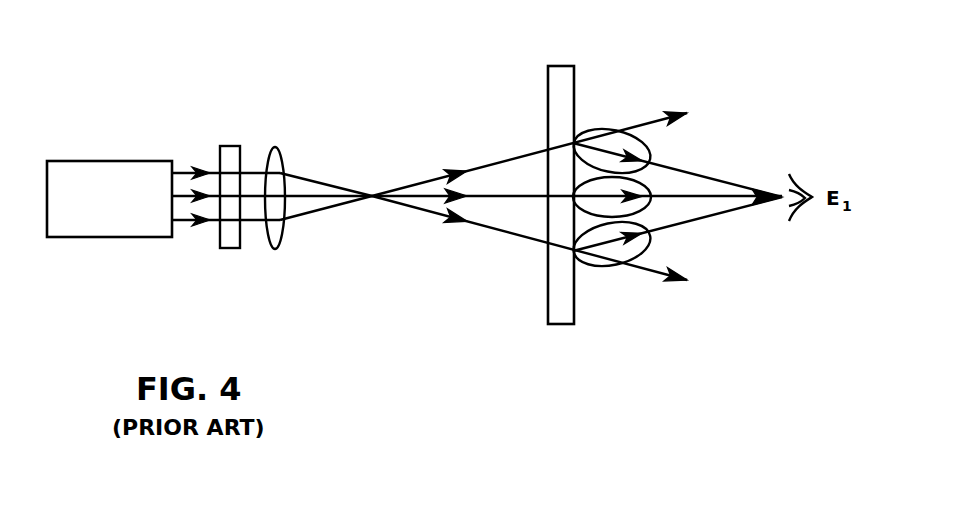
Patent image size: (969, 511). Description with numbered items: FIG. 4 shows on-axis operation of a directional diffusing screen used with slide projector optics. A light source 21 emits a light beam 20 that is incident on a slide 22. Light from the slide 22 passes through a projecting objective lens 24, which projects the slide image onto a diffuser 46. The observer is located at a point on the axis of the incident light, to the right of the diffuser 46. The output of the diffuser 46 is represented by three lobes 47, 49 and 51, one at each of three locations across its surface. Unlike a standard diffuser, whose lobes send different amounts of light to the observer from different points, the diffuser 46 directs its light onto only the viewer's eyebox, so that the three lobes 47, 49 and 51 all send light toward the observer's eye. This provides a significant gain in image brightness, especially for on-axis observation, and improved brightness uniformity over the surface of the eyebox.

The light beam 20 is at (187, 140).
The light source 21 is at (100, 160).
The slide 22 is at (236, 249).
The projecting objective lens 24 is at (276, 147).
The diffuser 46 is at (566, 66).
The lobe 47 is at (604, 131).
The lobe 49 is at (655, 207).
The lobe 51 is at (598, 268).